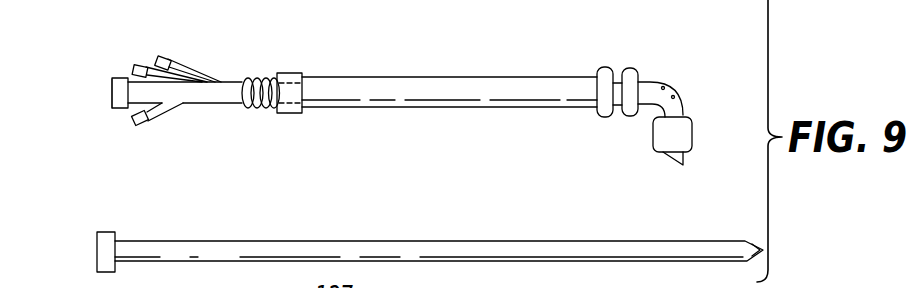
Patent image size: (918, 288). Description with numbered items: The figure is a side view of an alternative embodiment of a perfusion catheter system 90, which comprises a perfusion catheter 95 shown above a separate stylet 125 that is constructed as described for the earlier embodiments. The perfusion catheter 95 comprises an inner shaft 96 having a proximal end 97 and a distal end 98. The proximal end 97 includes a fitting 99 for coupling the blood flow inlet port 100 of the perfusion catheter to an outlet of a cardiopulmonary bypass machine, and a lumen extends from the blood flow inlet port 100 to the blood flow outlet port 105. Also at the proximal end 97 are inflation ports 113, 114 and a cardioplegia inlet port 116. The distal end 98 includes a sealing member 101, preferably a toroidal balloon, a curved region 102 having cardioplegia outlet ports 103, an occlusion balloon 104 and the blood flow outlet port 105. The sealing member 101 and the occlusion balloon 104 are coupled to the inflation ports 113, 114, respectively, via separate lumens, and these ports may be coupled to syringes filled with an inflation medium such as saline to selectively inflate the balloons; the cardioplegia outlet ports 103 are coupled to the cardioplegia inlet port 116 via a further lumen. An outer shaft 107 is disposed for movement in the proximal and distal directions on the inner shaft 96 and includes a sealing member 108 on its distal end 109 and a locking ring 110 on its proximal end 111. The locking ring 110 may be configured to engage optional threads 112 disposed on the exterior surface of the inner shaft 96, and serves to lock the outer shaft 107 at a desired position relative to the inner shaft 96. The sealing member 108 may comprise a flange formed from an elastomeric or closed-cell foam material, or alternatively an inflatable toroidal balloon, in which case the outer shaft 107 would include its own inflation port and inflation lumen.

The catheter system 90 is at (97, 130).
The perfusion catheter 95 is at (430, 53).
The inner shaft 96 is at (208, 103).
The proximal end 97 is at (200, 55).
The distal end 98 is at (604, 144).
The fitting 99 is at (122, 110).
The blood flow inlet port 100 is at (112, 79).
The sealing member 101 is at (628, 67).
The curved region 102 is at (647, 78).
The cardioplegia outlet ports 103 is at (670, 88).
The occlusion balloon 104 is at (688, 137).
The blood flow outlet port 105 is at (672, 165).
The outer shaft 107 is at (417, 95).
The sealing member 108 is at (603, 67).
The distal end 109 is at (572, 100).
The locking ring 110 is at (292, 50).
The proximal end 111 is at (322, 100).
The threads 112 is at (263, 110).
The inflation port 113 is at (140, 64).
The inflation port 114 is at (167, 57).
The cardioplegia inlet port 116 is at (143, 124).
The stylet 125 is at (335, 233).